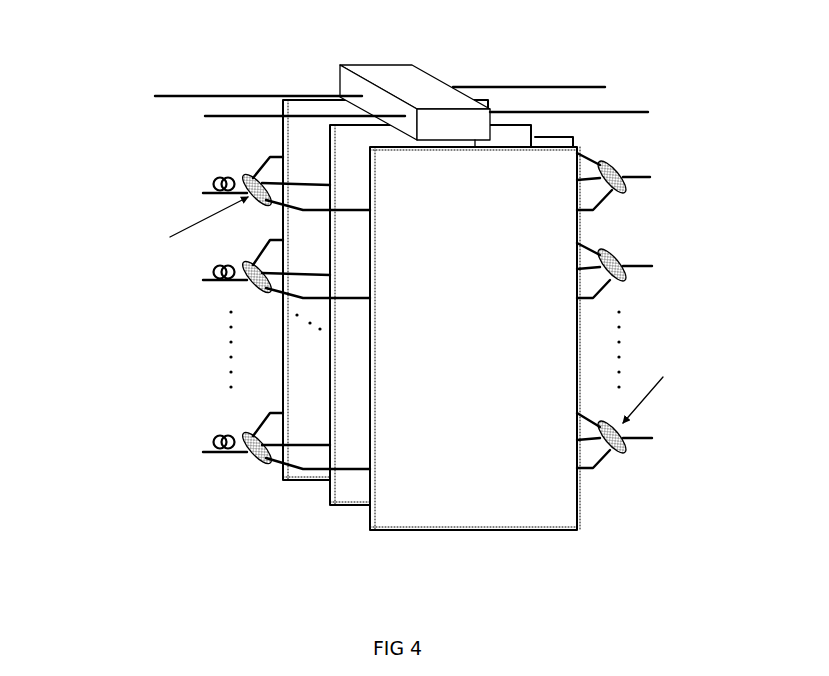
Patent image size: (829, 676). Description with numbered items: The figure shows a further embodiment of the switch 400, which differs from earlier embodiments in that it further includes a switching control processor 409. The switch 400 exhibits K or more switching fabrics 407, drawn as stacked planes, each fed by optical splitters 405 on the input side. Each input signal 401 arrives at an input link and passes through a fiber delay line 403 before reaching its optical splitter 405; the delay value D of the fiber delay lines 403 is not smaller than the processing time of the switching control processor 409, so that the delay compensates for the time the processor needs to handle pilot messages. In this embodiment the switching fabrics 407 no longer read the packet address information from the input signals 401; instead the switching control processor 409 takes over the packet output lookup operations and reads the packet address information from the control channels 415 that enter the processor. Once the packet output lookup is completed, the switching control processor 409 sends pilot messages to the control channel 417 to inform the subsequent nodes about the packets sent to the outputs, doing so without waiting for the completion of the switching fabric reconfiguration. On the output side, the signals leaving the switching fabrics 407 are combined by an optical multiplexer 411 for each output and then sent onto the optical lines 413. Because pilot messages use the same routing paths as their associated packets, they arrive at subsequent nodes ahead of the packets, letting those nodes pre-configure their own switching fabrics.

The switch 400 is at (396, 274).
The input signals 401 is at (188, 190).
The fiber delay lines 403 is at (217, 177).
The optical splitters 405 is at (252, 205).
The switching fabrics 407 is at (570, 147).
The switching control processor 409 is at (427, 90).
The optical multiplexer 411 is at (625, 195).
The optical lines 413 is at (673, 172).
The control channels 415 is at (125, 98).
The control channel 417 is at (633, 77).